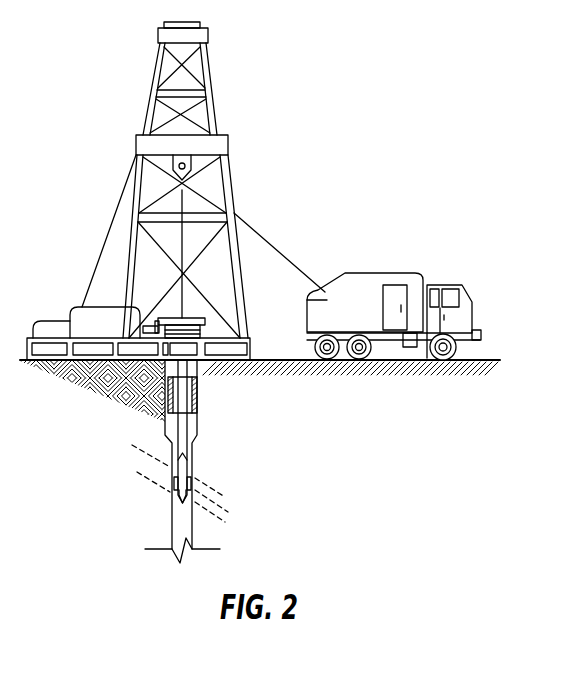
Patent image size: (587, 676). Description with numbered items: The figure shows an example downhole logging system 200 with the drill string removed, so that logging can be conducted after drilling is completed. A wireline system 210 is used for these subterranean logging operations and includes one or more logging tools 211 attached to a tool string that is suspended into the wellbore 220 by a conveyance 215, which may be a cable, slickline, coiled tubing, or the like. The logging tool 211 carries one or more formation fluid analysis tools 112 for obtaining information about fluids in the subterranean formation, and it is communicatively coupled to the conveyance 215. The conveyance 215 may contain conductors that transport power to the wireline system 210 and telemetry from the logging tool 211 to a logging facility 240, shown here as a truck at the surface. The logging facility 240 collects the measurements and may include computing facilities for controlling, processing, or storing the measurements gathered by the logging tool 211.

The downhole logging system 200 is at (354, 47).
The logging facility 240 is at (385, 273).
The conveyance 215 is at (195, 404).
The wellbore 220 is at (188, 432).
The wireline system 210 is at (200, 462).
The formation fluid analysis tool 112 is at (175, 483).
The logging tool 211 is at (180, 493).